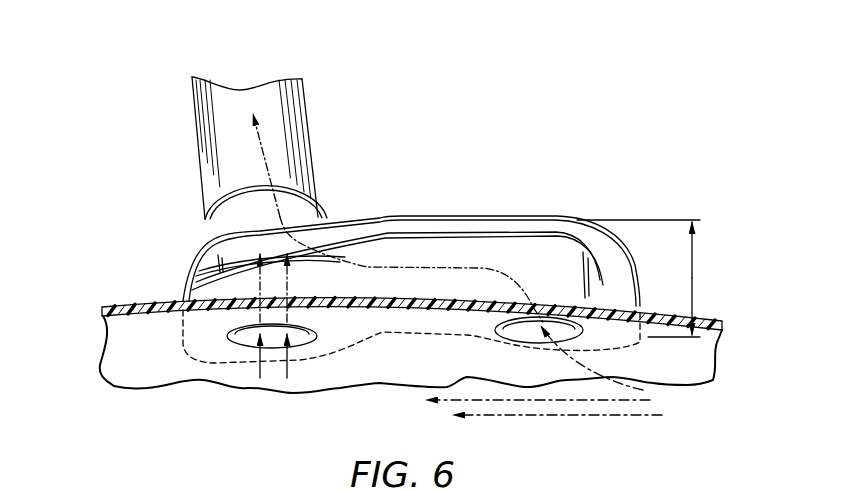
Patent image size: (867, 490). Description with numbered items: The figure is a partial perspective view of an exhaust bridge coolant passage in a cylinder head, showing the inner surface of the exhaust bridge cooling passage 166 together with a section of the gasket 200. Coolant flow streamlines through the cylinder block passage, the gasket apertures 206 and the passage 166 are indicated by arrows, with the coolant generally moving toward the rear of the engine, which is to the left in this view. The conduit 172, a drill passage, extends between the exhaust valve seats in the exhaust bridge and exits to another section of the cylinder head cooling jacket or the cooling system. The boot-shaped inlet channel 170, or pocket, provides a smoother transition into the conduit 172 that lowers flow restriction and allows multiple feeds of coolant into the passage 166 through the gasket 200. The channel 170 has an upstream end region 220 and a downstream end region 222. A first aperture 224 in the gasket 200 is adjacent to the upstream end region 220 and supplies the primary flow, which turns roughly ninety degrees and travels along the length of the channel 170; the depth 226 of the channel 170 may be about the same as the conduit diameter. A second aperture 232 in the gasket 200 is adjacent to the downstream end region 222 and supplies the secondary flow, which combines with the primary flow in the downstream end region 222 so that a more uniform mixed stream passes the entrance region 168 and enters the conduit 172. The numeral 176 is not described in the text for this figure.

The exhaust bridge cooling passage 166 is at (459, 158).
The entrance region 168 is at (640, 342).
The inlet channel 170 is at (543, 250).
The conduit 172 is at (312, 137).
The base 176 is at (407, 330).
The gasket 200 is at (133, 342).
The gasket apertures 206 is at (183, 347).
The upstream end region 220 is at (659, 197).
The downstream end region 222 is at (166, 253).
The first aperture 224 is at (600, 333).
The depth 226 is at (691, 278).
The second aperture 232 is at (274, 344).